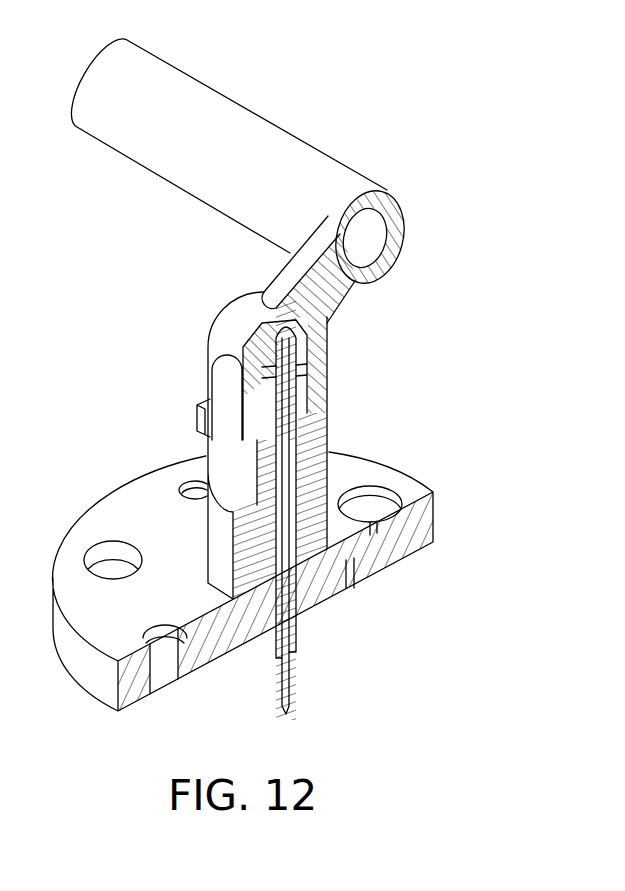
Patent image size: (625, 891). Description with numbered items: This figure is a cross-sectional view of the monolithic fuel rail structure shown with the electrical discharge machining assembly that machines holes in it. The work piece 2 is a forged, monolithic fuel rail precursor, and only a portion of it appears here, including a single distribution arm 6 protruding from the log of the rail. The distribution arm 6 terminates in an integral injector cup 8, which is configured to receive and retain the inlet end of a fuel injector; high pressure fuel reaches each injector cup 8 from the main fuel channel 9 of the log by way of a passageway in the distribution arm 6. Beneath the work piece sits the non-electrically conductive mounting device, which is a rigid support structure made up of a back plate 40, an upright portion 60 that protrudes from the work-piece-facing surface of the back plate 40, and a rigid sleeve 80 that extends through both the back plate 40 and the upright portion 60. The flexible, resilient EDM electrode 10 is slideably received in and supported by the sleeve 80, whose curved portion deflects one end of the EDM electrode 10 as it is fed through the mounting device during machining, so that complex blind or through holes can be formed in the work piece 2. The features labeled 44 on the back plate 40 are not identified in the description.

The work piece 2 is at (203, 95).
The main fuel channel 9 is at (367, 233).
The distribution arm 6 is at (343, 299).
The injector cup 8 is at (327, 380).
The back plate 40 is at (353, 458).
The mounting holes 44 is at (185, 490).
The upright portion 60 is at (367, 577).
The sleeve 80 is at (297, 630).
The EDM electrode 10 is at (290, 688).